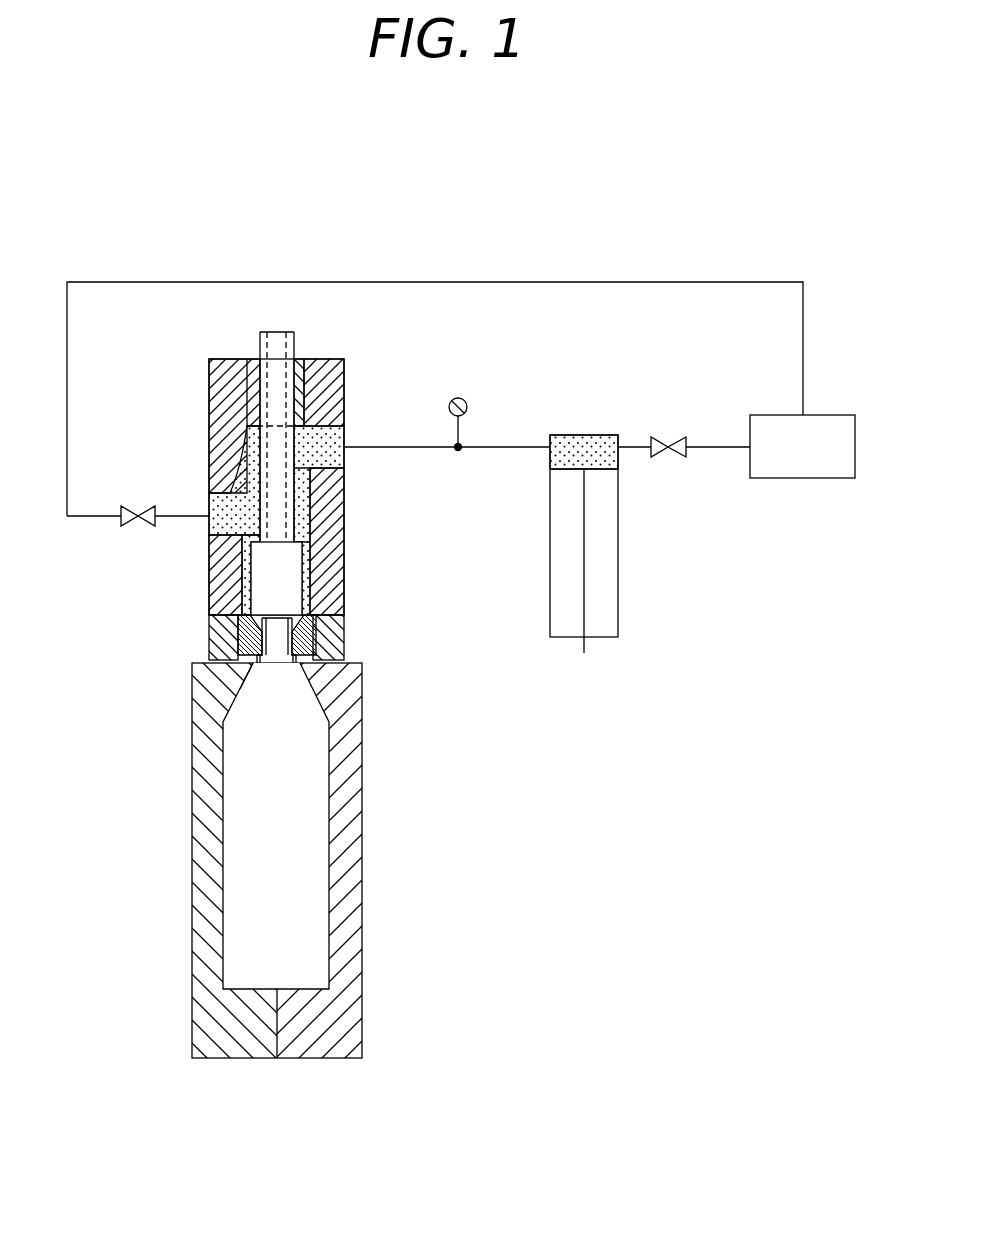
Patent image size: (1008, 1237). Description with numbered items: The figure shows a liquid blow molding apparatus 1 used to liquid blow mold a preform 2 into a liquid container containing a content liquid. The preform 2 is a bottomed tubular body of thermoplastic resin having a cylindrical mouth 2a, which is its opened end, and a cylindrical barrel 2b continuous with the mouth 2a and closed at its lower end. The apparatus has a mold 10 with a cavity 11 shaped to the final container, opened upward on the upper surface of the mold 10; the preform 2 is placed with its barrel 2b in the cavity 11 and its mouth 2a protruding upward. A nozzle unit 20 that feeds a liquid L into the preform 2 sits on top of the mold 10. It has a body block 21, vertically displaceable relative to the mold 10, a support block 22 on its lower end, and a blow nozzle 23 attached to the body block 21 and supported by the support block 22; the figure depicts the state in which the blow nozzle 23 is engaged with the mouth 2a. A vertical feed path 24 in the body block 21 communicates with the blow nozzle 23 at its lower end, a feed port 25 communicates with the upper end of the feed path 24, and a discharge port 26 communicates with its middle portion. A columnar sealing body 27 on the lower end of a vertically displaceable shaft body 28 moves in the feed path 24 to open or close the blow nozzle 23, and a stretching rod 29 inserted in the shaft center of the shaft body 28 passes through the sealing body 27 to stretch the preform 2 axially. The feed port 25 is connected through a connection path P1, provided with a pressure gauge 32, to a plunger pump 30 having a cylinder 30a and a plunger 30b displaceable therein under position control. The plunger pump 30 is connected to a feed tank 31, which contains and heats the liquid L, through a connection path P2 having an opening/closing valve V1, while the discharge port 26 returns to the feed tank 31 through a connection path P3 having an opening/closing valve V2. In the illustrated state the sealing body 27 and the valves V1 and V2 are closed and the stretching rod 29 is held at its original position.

The liquid blow molding apparatus 1 is at (508, 232).
The preform 2 is at (296, 780).
The mouth 2a is at (310, 648).
The barrel 2b is at (296, 748).
The mold 10 is at (362, 918).
The cavity 11 is at (329, 875).
The nozzle unit 20 is at (335, 359).
The body block 21 is at (220, 398).
The support block 22 is at (209, 640).
The blow nozzle 23 is at (315, 630).
The feed path 24 is at (300, 497).
The feed port 25 is at (345, 436).
The discharge port 26 is at (211, 505).
The sealing body 27 is at (293, 573).
The shaft body 28 is at (262, 345).
The stretching rod 29 is at (255, 700).
The plunger pump 30 is at (619, 562).
The cylinder 30a is at (618, 600).
The plunger 30b is at (570, 472).
The feed tank 31 is at (818, 461).
The pressure gauge 32 is at (458, 398).
The liquid L is at (300, 530).
The connection path P1 is at (505, 447).
The connection path P2 is at (716, 447).
The connection path P3 is at (408, 281).
The opening/closing valve V1 is at (665, 437).
The opening/closing valve V2 is at (141, 527).